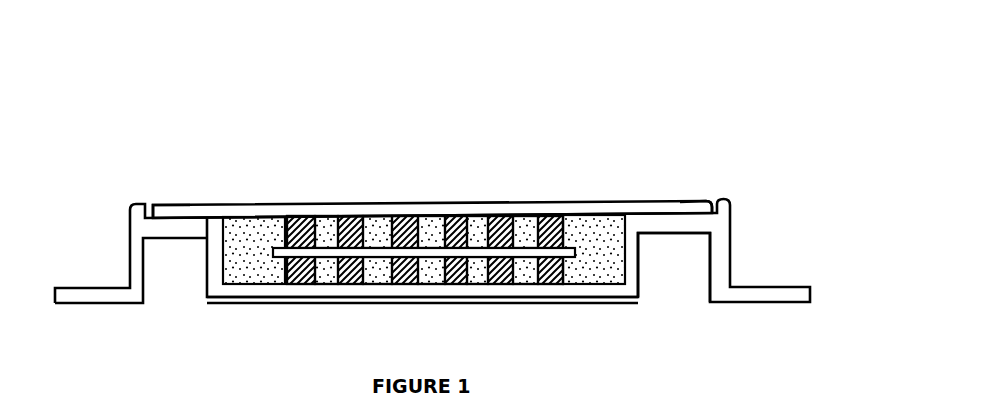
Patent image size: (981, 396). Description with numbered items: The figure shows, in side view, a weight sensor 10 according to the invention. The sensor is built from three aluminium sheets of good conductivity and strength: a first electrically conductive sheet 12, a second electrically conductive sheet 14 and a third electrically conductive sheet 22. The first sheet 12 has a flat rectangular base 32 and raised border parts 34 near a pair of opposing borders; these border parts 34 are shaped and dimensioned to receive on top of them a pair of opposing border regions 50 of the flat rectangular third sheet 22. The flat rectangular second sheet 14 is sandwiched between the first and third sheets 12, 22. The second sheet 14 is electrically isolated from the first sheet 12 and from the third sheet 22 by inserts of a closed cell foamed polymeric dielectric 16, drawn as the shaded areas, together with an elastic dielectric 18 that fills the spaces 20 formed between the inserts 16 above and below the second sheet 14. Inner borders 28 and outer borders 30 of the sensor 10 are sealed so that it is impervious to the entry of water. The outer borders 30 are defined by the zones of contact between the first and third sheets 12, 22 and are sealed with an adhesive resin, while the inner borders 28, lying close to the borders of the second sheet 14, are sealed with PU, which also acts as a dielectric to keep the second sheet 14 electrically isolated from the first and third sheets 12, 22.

The weight sensor 10 is at (703, 113).
The first electrically conductive sheet 12 is at (770, 287).
The second electrically conductive sheet 14 is at (278, 248).
The closed cell foamed polymeric dielectric insert 16 is at (407, 218).
The elastic dielectric 18 is at (475, 218).
The space 20 is at (426, 218).
The third electrically conductive sheet 22 is at (328, 212).
The inner border 28 is at (247, 238).
The outer border 30 is at (154, 204).
The flat rectangular base 32 is at (612, 292).
The raised border part 34 is at (668, 222).
The border region 50 is at (167, 207).